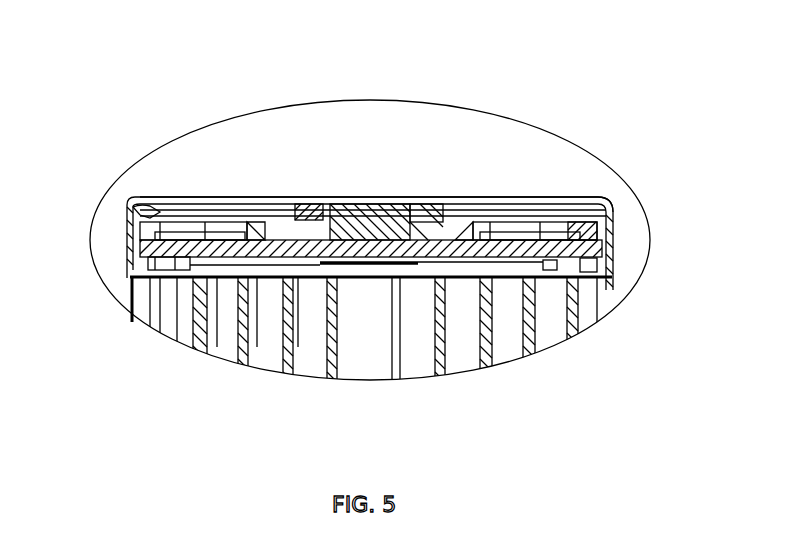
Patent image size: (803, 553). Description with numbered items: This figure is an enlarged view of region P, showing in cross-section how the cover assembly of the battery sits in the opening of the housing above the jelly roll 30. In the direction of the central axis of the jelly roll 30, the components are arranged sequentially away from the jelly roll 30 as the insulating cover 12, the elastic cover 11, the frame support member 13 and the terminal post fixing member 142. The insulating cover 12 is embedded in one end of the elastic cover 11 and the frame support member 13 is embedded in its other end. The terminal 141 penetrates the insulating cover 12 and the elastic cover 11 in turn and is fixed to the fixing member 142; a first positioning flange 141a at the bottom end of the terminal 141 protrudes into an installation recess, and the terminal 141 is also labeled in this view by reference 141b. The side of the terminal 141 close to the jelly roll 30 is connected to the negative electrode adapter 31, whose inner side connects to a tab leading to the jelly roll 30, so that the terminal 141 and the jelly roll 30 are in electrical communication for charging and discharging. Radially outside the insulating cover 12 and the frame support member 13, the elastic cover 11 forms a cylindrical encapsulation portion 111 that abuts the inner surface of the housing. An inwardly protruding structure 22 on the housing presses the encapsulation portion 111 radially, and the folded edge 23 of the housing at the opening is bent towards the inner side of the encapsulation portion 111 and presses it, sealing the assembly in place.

The region P is at (370, 198).
The elastic cover 11 is at (606, 245).
The encapsulation portion 111 is at (600, 225).
The insulating cover 12 is at (600, 273).
The frame support member 13 is at (583, 230).
The protruding structure 22 is at (148, 262).
The folded edge 23 is at (548, 205).
The jelly roll 30 is at (565, 290).
The negative electrode adapter 31 is at (420, 262).
The terminal 141 is at (351, 137).
The first positioning flange 141a is at (312, 205).
The second insulating portion 141b is at (340, 205).
The terminal post fixing member 142 is at (433, 205).